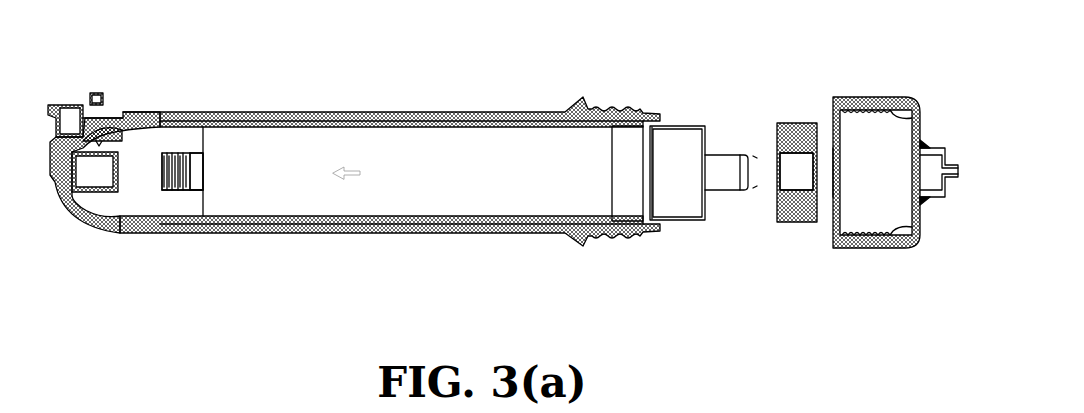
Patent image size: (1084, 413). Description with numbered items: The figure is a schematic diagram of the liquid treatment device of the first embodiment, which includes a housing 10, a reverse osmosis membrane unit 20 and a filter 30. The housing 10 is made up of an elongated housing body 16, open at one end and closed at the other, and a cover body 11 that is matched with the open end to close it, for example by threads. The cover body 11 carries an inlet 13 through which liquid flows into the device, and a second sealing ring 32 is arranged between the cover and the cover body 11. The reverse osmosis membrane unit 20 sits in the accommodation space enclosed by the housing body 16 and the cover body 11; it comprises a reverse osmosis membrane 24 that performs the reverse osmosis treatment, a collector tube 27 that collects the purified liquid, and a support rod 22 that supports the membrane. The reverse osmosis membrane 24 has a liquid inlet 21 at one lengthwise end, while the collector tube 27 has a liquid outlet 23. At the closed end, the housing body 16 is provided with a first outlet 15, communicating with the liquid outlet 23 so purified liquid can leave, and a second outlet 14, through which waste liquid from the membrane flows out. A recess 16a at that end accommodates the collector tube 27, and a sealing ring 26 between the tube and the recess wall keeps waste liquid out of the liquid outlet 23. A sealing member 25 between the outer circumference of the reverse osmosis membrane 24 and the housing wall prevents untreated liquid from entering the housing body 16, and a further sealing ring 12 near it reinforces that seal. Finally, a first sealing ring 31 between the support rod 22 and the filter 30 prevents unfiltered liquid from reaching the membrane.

The housing 10 is at (270, 111).
The cover body 11 is at (878, 105).
The sealing ring 12 is at (678, 118).
The inlet 13 is at (933, 147).
The second outlet 14 is at (108, 103).
The first outlet 15 is at (74, 103).
The housing body 16 is at (357, 122).
The recess 16a is at (95, 195).
The reverse osmosis membrane unit 20 is at (412, 157).
The liquid inlet 21 is at (707, 140).
The support rod 22 is at (728, 162).
The liquid outlet 23 is at (162, 163).
The reverse osmosis membrane 24 is at (200, 193).
The sealing member 25 is at (625, 135).
The sealing ring 26 is at (177, 190).
The collector tube 27 is at (198, 155).
The filter 30 is at (798, 215).
The first sealing ring 31 is at (755, 190).
The second sealing ring 32 is at (832, 197).